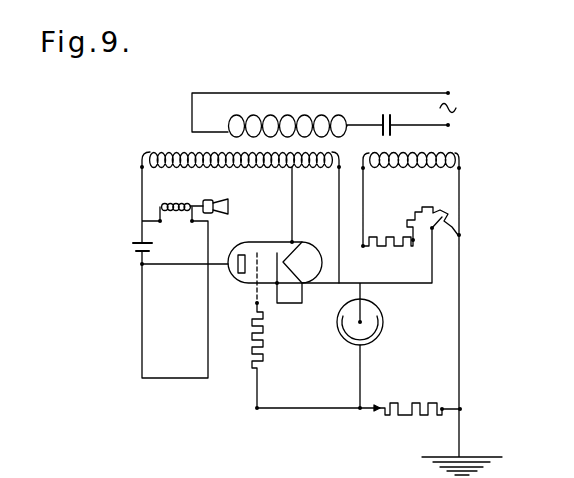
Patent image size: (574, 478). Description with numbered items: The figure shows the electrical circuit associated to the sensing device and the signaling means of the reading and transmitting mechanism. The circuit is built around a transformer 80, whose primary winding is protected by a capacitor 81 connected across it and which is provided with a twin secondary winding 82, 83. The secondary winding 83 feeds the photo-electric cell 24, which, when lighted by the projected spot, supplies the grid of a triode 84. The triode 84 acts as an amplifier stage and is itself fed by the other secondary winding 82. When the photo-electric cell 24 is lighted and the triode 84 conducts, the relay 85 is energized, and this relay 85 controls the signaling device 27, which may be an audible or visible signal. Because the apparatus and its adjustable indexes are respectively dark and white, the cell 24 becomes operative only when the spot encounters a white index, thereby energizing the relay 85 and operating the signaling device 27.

The transformer 80 is at (293, 115).
The capacitor 81 is at (383, 118).
The secondary winding 82 is at (250, 153).
The secondary winding 83 is at (447, 168).
The triode 84 is at (303, 255).
The relay 85 is at (187, 205).
The signaling device 27 is at (228, 206).
The photo-electric cell 24 is at (372, 322).